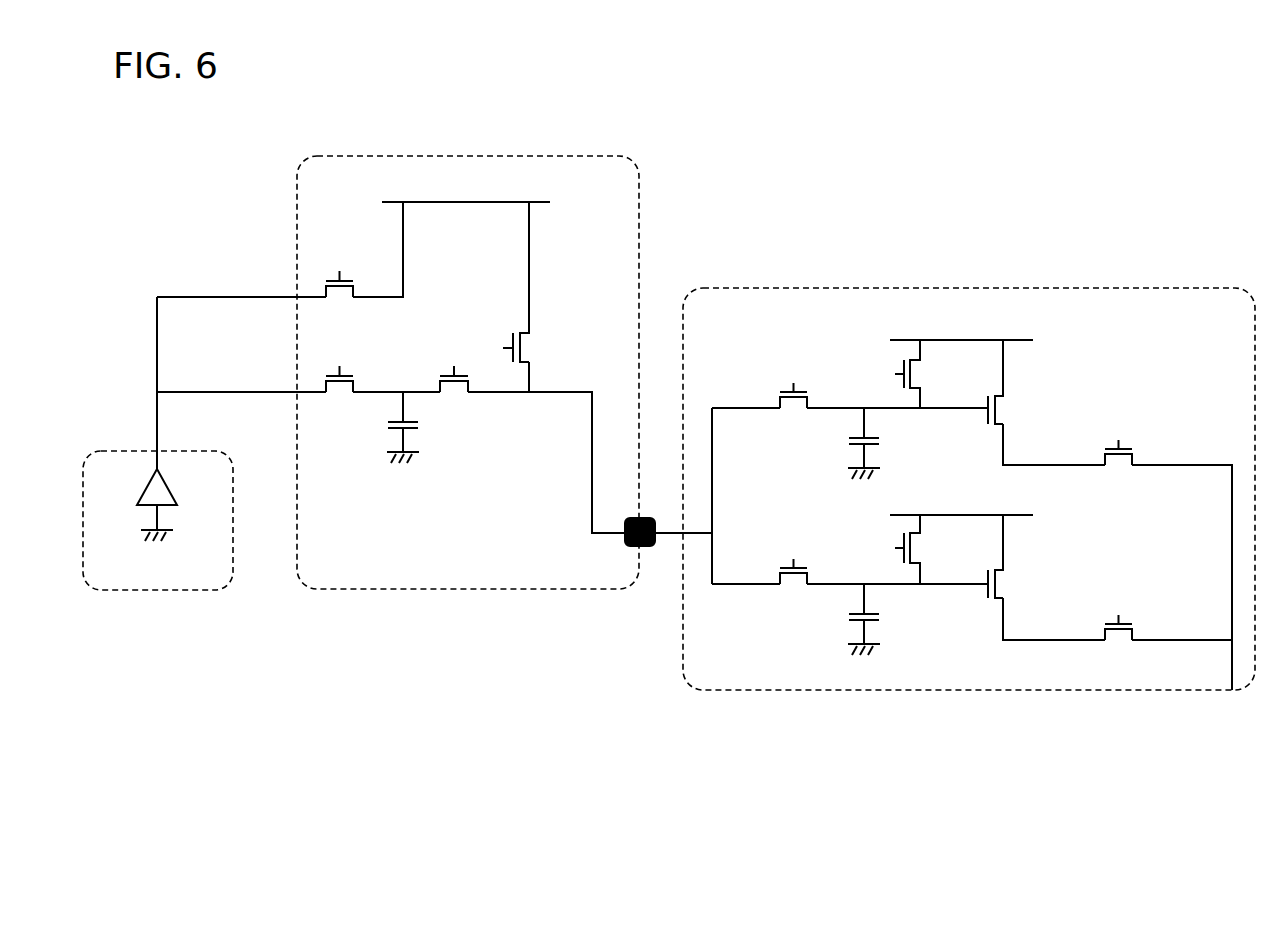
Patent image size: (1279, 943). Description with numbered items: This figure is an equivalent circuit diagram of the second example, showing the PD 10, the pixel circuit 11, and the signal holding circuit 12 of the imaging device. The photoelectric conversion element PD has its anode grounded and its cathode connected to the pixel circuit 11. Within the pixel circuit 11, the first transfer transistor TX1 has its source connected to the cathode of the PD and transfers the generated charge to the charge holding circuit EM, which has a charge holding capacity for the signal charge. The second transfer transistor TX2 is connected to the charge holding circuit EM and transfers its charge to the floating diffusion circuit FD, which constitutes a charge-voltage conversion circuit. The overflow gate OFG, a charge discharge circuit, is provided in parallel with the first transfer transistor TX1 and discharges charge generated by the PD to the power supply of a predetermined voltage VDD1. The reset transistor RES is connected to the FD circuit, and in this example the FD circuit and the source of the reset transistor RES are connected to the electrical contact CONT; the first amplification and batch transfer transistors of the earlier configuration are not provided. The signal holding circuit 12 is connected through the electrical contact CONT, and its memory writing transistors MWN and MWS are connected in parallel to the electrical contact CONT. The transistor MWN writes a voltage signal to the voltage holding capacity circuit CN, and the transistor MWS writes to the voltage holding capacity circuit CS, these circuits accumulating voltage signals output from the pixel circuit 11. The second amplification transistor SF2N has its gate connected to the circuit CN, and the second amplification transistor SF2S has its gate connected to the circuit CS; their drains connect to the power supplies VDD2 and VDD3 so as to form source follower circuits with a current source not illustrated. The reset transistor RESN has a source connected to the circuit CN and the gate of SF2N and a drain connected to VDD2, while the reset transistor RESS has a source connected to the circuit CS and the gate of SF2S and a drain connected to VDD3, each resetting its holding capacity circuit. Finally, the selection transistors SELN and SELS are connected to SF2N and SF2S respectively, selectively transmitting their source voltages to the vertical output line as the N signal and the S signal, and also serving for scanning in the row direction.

The PD 10 is at (143, 590).
The pixel circuit 11 is at (383, 589).
The signal holding circuit 12 is at (838, 288).
The photoelectric conversion element PD is at (140, 419).
The overflow gate OFG is at (337, 296).
The first transfer transistor TX1 is at (337, 392).
The second transfer transistor TX2 is at (454, 392).
The charge holding circuit EM is at (388, 427).
The floating diffusion circuit FD is at (518, 390).
The reset transistor RES is at (533, 282).
The power supply of predetermined voltage VDD1 is at (466, 191).
The power supply of predetermined voltage VDD2 is at (961, 328).
The power supply of predetermined voltage VDD3 is at (961, 503).
The electrical contact CONT is at (650, 546).
The memory writing transistor MWN is at (791, 408).
The voltage holding capacity circuit CN is at (850, 443).
The reset transistor RESN is at (930, 374).
The second amplification transistor SF2N is at (1021, 382).
The selection transistor SELN is at (1113, 465).
The memory writing transistor MWS is at (790, 584).
The voltage holding capacity circuit CS is at (850, 619).
The reset transistor RESS is at (930, 549).
The second amplification transistor SF2S is at (1020, 556).
The selection transistor SELS is at (1112, 641).